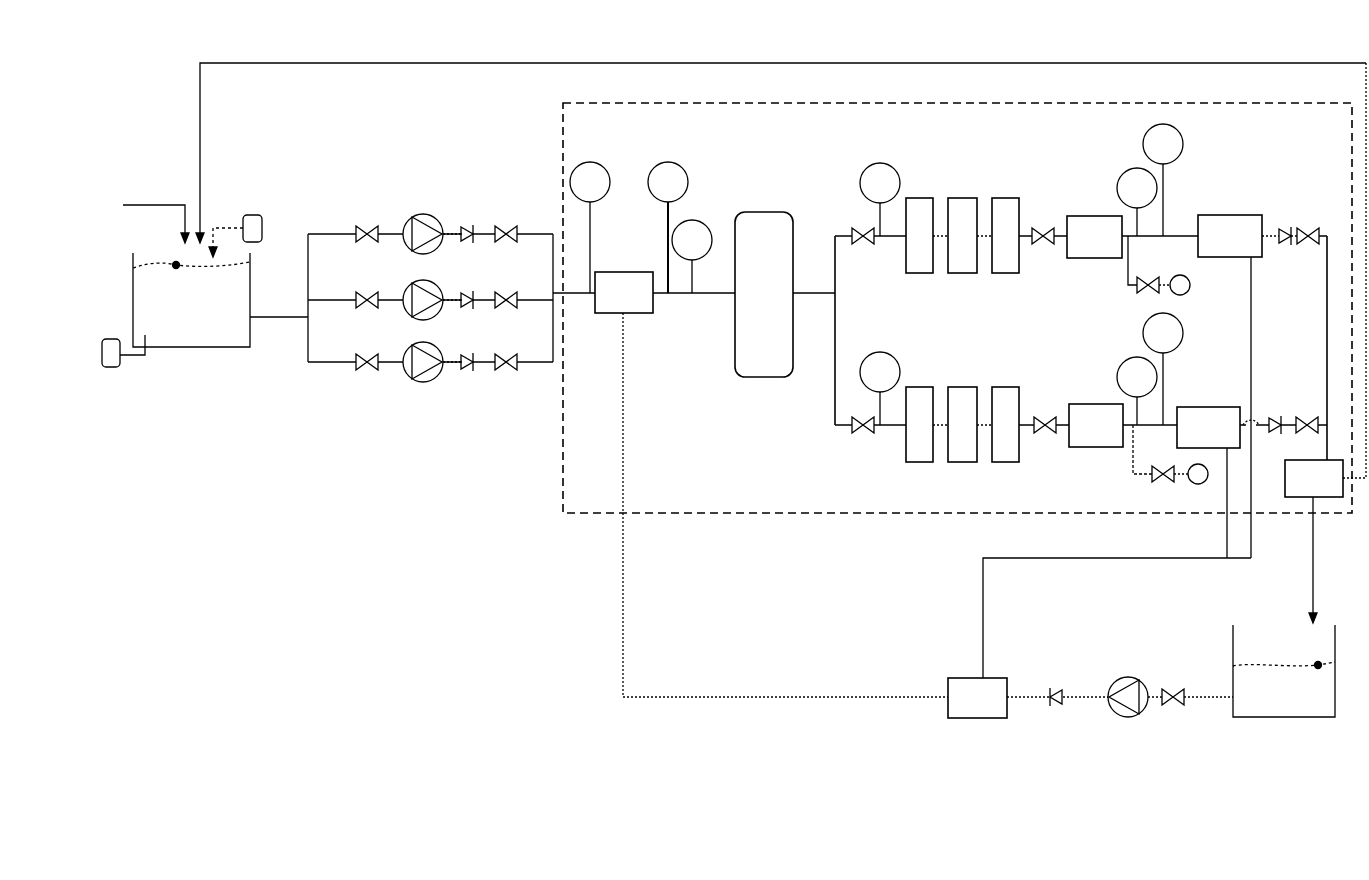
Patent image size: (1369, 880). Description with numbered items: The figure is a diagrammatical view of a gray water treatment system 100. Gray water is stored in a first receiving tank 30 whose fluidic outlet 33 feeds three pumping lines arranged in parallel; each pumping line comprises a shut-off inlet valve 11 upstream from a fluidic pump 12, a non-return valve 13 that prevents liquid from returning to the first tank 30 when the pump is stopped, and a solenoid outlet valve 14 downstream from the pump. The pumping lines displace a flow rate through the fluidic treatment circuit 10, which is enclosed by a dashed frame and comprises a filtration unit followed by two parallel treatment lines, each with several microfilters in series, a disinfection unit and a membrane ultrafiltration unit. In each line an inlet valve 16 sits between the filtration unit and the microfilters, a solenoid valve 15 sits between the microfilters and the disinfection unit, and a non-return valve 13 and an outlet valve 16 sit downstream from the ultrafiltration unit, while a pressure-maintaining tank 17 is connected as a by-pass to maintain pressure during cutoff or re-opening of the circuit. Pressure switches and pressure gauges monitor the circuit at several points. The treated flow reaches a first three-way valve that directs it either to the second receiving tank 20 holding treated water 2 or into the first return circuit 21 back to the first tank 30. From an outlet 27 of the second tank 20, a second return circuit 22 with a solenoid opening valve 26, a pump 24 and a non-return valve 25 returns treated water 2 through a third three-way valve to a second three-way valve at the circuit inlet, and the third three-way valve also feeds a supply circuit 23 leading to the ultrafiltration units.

The treatment system 100 is at (260, 462).
The first receiving tank 30 is at (212, 350).
The first fluidic return circuit 21 is at (238, 65).
The fluidic outlet 33 is at (298, 320).
The inlet valve 11 is at (358, 228).
The fluidic pump 12 is at (422, 214).
The non-return valve 13 is at (465, 227).
The outlet valve 14 is at (512, 227).
The fluidic treatment circuit 10 is at (570, 520).
The inlet valve / outlet valve 16 is at (855, 228).
The solenoid valve 15 is at (1045, 226).
The pressure-maintaining tank 17 is at (1174, 296).
The supply circuit 23 is at (981, 578).
The second return circuit 22 is at (621, 617).
The non-return valve 25 is at (1052, 687).
The pump 24 is at (1120, 677).
The opening valve 26 is at (1175, 687).
The outlet 27 is at (1197, 700).
The second receiving tank 20 is at (1230, 632).
The treated water 2 is at (1245, 686).